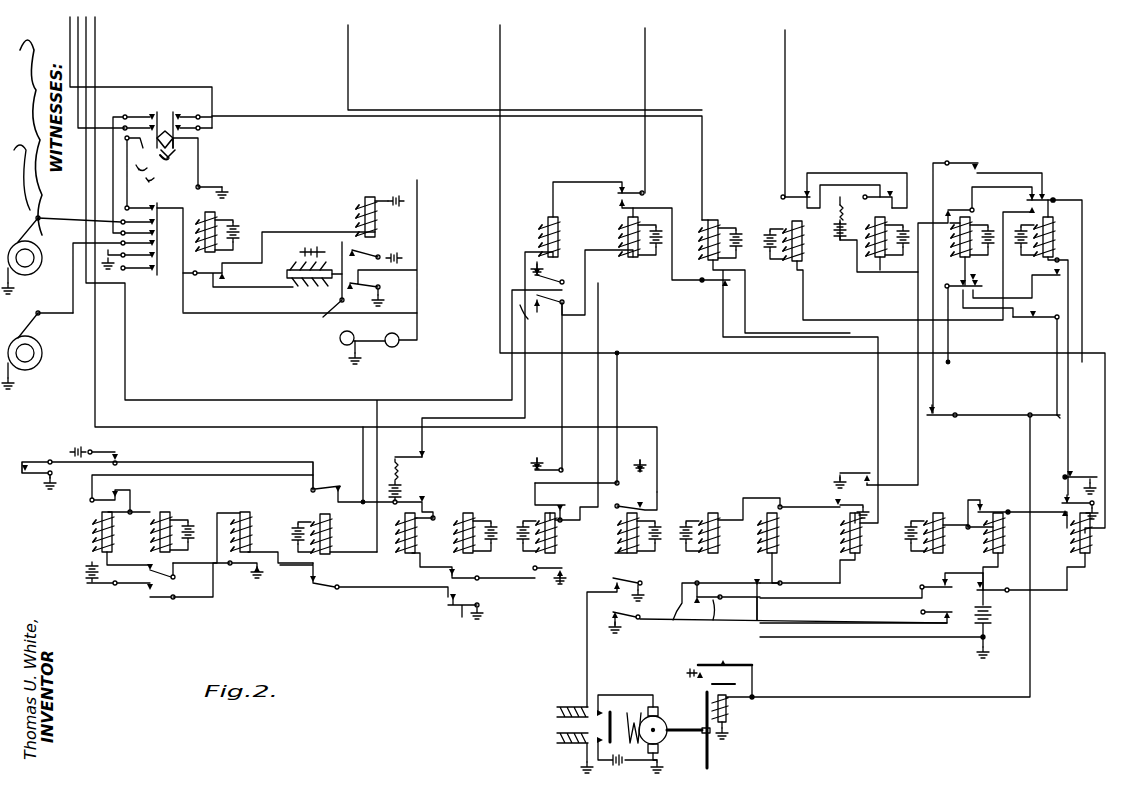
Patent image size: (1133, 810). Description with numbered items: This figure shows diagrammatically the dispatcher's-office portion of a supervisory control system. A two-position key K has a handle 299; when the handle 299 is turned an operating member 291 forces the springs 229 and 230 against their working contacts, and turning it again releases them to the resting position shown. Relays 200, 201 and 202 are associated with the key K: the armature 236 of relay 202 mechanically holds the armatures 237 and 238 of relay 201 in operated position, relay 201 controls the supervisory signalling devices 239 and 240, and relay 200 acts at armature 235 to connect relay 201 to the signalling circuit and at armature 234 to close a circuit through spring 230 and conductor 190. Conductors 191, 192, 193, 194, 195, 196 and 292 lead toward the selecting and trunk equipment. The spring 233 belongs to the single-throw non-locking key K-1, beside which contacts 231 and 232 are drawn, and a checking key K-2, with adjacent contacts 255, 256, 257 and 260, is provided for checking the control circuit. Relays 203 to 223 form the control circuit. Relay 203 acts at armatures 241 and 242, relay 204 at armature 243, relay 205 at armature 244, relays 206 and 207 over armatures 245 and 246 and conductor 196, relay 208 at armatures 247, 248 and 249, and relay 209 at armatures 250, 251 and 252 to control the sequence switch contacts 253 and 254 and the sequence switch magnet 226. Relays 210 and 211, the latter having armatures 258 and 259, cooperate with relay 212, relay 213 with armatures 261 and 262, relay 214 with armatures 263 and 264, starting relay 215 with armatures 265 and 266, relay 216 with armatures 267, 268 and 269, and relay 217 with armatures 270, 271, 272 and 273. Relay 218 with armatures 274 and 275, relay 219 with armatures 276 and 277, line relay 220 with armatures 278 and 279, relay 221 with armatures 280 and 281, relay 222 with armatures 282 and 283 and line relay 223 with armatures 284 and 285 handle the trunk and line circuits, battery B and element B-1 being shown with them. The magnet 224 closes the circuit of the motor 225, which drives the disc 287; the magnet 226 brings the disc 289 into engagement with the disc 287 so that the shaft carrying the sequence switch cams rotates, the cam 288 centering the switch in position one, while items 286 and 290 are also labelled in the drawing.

The conductor 190 is at (97, 29).
The line conductor 191 is at (97, 46).
The conductor 192 is at (86, 54).
The conductor 193 is at (95, 65).
The conductor 194 is at (348, 42).
The conductor 195 is at (645, 40).
The conductor 196 is at (785, 45).
The relay 200 is at (232, 222).
The relay 201 is at (360, 212).
The relay 202 is at (312, 286).
The relay 203 is at (522, 319).
The relay 204 is at (612, 261).
The relay 205 is at (719, 219).
The relay 206 is at (896, 263).
The relay 207 is at (880, 260).
The relay 208 is at (967, 220).
The relay 209 is at (1057, 252).
The relay 210 is at (97, 535).
The relay 211 is at (168, 520).
The relay 212 is at (245, 512).
The relay 213 is at (330, 555).
The relay 214 is at (415, 524).
The starting relay 215 is at (478, 518).
The relay 216 is at (558, 533).
The relay 217 is at (620, 557).
The relay 218 is at (710, 518).
The relay 219 is at (778, 536).
The line relay 220 is at (842, 542).
The relay 221 is at (927, 524).
The relay 222 is at (993, 540).
The line relay 223 is at (1078, 550).
The magnet 224 is at (555, 730).
The motor 225 is at (653, 707).
The sequence switch magnet 226 is at (728, 716).
The spring 229 is at (135, 164).
The spring 230 is at (192, 121).
The contact 231 is at (157, 208).
The contact 232 is at (112, 223).
The spring 233 is at (131, 271).
The armature 234 is at (220, 187).
The armature 235 is at (213, 290).
The armature 236 is at (320, 317).
The armature 237 is at (380, 255).
The armature 238 is at (396, 283).
The supervisory signalling device 239 is at (340, 345).
The supervisory signalling device 240 is at (400, 345).
The armature 241 is at (555, 271).
The armature 242 is at (542, 382).
The armature 243 is at (633, 190).
The armature 244 is at (708, 290).
The armature 245 is at (793, 195).
The armature 246 is at (878, 185).
The armature 247 is at (958, 161).
The armature 248 is at (949, 331).
The armature 249 is at (947, 288).
The armature 250 is at (1048, 198).
The armature 251 is at (1019, 283).
The armature 252 is at (1039, 357).
The sequence switch cam 253 is at (938, 410).
The sequence switch contacts 254 is at (1045, 422).
The contact 255 is at (115, 452).
The contact 256 is at (85, 502).
The contact 257 is at (105, 590).
The armature 258 is at (165, 580).
The armature 259 is at (158, 600).
The contact 260 is at (240, 570).
The armature 261 is at (325, 488).
The armature 262 is at (320, 595).
The armature 263 is at (405, 466).
The armature 264 is at (407, 494).
The armature 265 is at (470, 582).
The armature 266 is at (447, 615).
The armature 267 is at (548, 448).
The armature 268 is at (554, 494).
The armature 269 is at (548, 596).
The armature 270 is at (630, 470).
The armature 271 is at (638, 504).
The armature 272 is at (625, 581).
The armature 273 is at (628, 608).
The armature 274 is at (713, 609).
The armature 275 is at (727, 608).
The armature 276 is at (764, 507).
The armature 277 is at (775, 583).
The armature 278 is at (853, 473).
The armature 279 is at (840, 505).
The armature 280 is at (920, 587).
The armature 281 is at (940, 606).
The armature 282 is at (982, 512).
The armature 283 is at (992, 588).
The armature 284 is at (1080, 477).
The armature 285 is at (1063, 502).
The battery 286 is at (607, 773).
The disc 287 is at (712, 760).
The cam 288 is at (753, 660).
The disc 289 is at (735, 684).
The armature 290 is at (142, 171).
The operating member 291 is at (180, 149).
The conductor 292 is at (500, 45).
The handle 299 is at (176, 170).
The key K is at (432, 142).
The key K-1 is at (155, 230).
The checking key K-2 is at (40, 460).
The relay B-1 is at (331, 534).
The battery B is at (995, 624).